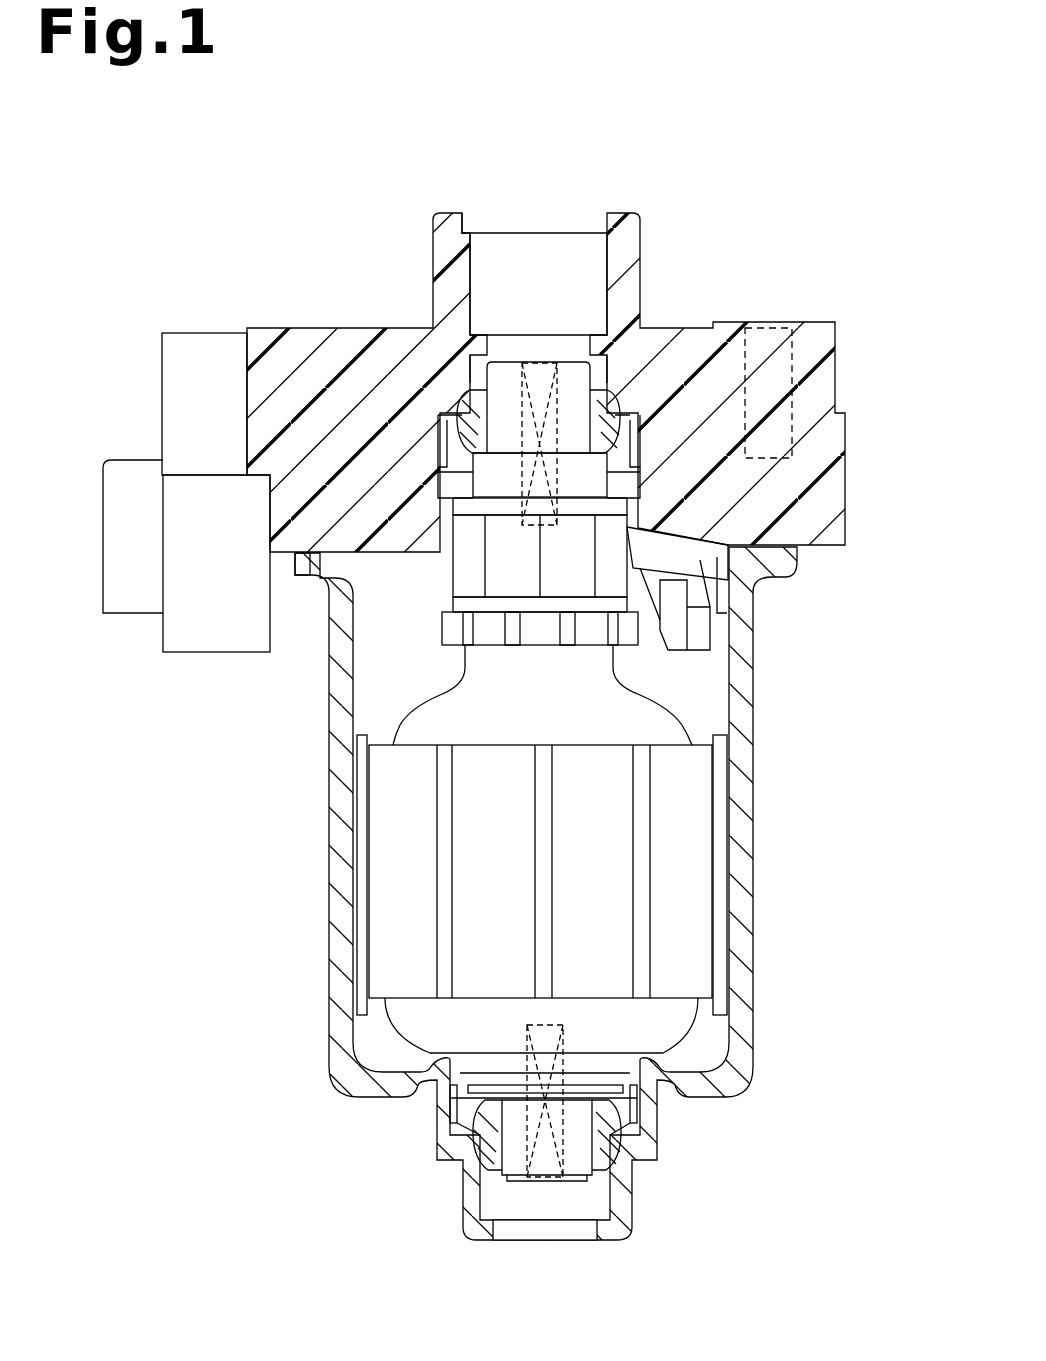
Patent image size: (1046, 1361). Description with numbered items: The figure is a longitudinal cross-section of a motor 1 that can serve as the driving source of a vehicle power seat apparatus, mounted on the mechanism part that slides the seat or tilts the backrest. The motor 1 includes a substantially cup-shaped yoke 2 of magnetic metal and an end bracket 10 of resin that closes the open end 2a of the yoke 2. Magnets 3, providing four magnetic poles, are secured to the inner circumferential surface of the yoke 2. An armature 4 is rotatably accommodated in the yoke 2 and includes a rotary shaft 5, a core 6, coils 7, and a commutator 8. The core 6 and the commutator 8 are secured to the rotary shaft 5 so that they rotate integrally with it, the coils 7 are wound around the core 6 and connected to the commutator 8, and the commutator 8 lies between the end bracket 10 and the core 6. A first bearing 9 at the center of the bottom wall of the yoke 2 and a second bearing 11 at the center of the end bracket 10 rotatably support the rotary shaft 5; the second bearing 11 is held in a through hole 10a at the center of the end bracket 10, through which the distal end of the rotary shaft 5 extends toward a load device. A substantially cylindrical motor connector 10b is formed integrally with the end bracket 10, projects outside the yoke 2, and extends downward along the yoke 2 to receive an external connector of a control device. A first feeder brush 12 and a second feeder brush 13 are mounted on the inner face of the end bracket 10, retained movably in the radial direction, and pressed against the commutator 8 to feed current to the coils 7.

The motor 1 is at (831, 160).
The yoke 2 is at (742, 707).
The open end 2a is at (320, 548).
The magnets 3 is at (357, 815).
The armature 4 is at (499, 849).
The rotary shaft 5 is at (578, 380).
The core 6 is at (387, 918).
The coils 7 is at (428, 708).
The commutator 8 is at (463, 575).
The first bearing 9 is at (612, 1147).
The end bracket 10 is at (823, 332).
The through hole 10a is at (612, 258).
The motor connector 10b is at (193, 640).
The second bearing 11 is at (474, 403).
The first feeder brush 12 is at (772, 588).
The second feeder brush 13 is at (677, 588).